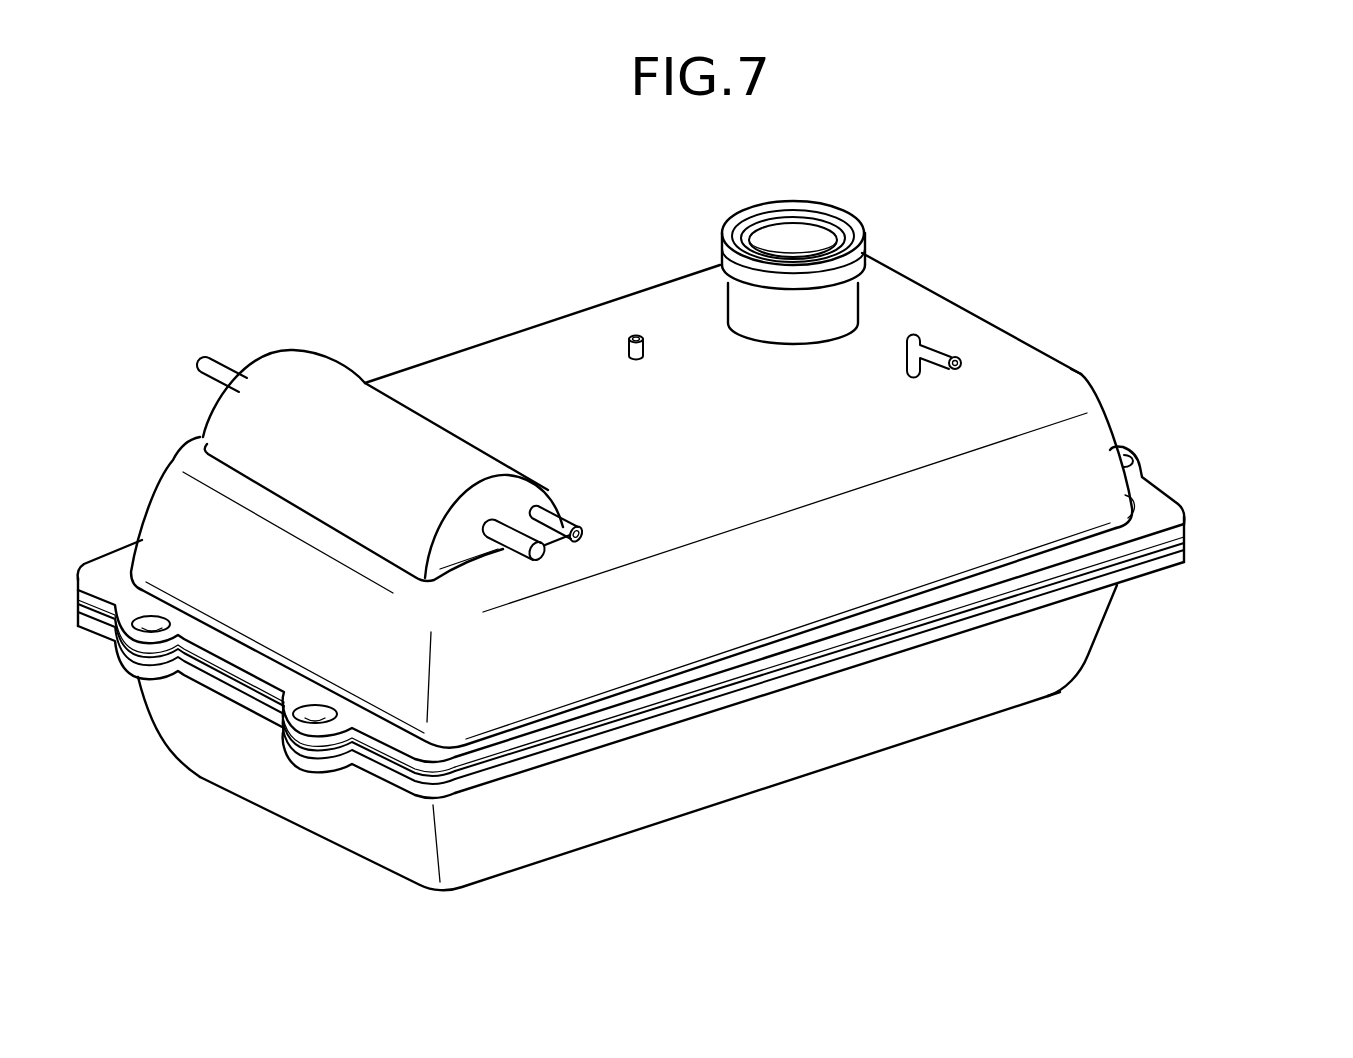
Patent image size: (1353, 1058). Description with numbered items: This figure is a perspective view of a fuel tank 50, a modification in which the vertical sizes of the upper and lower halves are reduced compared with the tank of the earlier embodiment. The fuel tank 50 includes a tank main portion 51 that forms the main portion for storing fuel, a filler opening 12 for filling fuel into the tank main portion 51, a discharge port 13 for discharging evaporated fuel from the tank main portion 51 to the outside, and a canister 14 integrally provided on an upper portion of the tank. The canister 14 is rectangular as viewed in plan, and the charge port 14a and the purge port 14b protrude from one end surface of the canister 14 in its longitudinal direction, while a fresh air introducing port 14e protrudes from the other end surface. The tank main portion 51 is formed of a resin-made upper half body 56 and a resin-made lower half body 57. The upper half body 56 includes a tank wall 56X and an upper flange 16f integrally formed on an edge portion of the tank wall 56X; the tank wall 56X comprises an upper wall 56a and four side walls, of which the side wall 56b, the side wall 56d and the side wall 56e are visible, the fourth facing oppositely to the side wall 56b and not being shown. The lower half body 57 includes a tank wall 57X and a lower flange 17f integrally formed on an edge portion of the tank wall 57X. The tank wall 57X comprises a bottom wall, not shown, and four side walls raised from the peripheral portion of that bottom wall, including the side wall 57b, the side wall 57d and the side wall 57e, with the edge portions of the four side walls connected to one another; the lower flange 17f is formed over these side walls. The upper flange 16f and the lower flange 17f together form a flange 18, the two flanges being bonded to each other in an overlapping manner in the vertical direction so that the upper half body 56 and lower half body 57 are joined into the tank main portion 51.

The fuel tank 50 is at (262, 248).
The filler opening 12 is at (768, 198).
The discharge port 13 is at (930, 345).
The canister 14 is at (242, 338).
The charge port 14a is at (575, 526).
The purge port 14b is at (518, 536).
The fresh air introducing port 14e is at (215, 356).
The tank main portion 51 is at (545, 326).
The upper half body 56 is at (1050, 360).
The upper wall 56a is at (478, 365).
The side wall 56b is at (1077, 490).
The side wall 56d is at (1104, 425).
The side wall 56e is at (175, 530).
The tank wall 56X is at (1068, 386).
The upper flange 16f is at (1187, 507).
The lower flange 17f is at (1187, 543).
The flange 18 is at (1287, 482).
The lower half body 57 is at (1097, 646).
The side wall 57b is at (803, 752).
The side wall 57d is at (1108, 612).
The side wall 57e is at (267, 790).
The tank wall 57X is at (1018, 693).